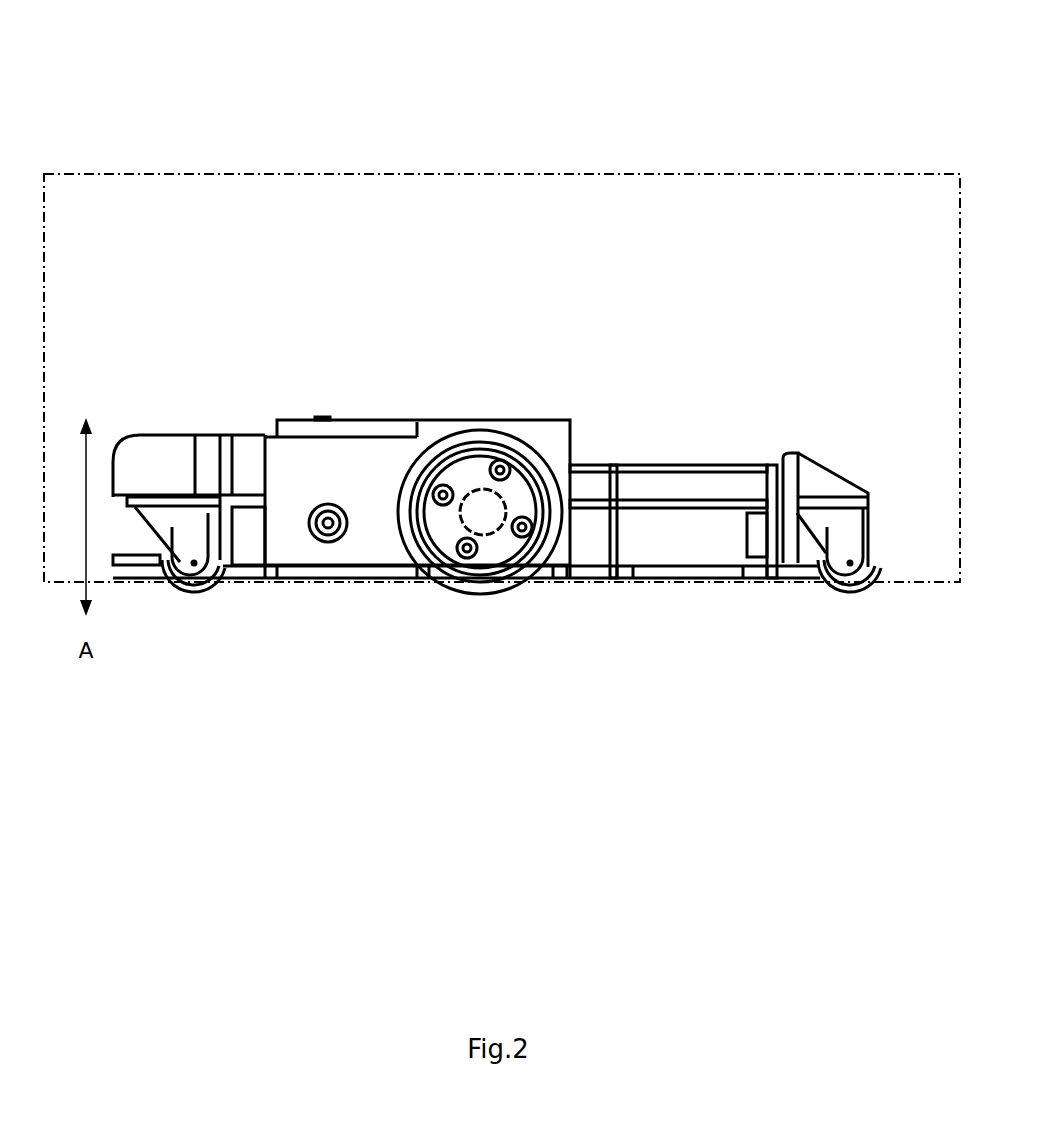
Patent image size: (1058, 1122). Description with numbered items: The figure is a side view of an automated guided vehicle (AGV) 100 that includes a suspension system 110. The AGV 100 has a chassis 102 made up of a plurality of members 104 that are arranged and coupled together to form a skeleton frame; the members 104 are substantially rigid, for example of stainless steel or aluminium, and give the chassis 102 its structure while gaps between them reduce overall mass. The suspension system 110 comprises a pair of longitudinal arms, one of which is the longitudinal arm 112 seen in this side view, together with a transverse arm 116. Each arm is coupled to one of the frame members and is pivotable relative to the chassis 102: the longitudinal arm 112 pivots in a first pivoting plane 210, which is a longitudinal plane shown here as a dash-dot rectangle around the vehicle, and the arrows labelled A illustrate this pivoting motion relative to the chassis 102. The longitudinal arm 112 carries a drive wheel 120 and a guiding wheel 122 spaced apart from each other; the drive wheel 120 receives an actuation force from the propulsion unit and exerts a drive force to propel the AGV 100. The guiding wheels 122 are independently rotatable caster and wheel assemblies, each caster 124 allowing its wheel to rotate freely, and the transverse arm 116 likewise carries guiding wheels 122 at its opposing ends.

The automated guided vehicle (AGV) 100 is at (308, 82).
The first pivoting plane 210 is at (542, 225).
The suspension system 110 is at (738, 655).
The chassis 102 is at (675, 567).
The members 104 is at (697, 487).
The longitudinal arm 112 is at (377, 552).
The transverse arm 116 is at (865, 492).
The drive wheel 120 is at (505, 550).
The guiding wheel 122 is at (185, 588).
The caster 124 is at (178, 530).